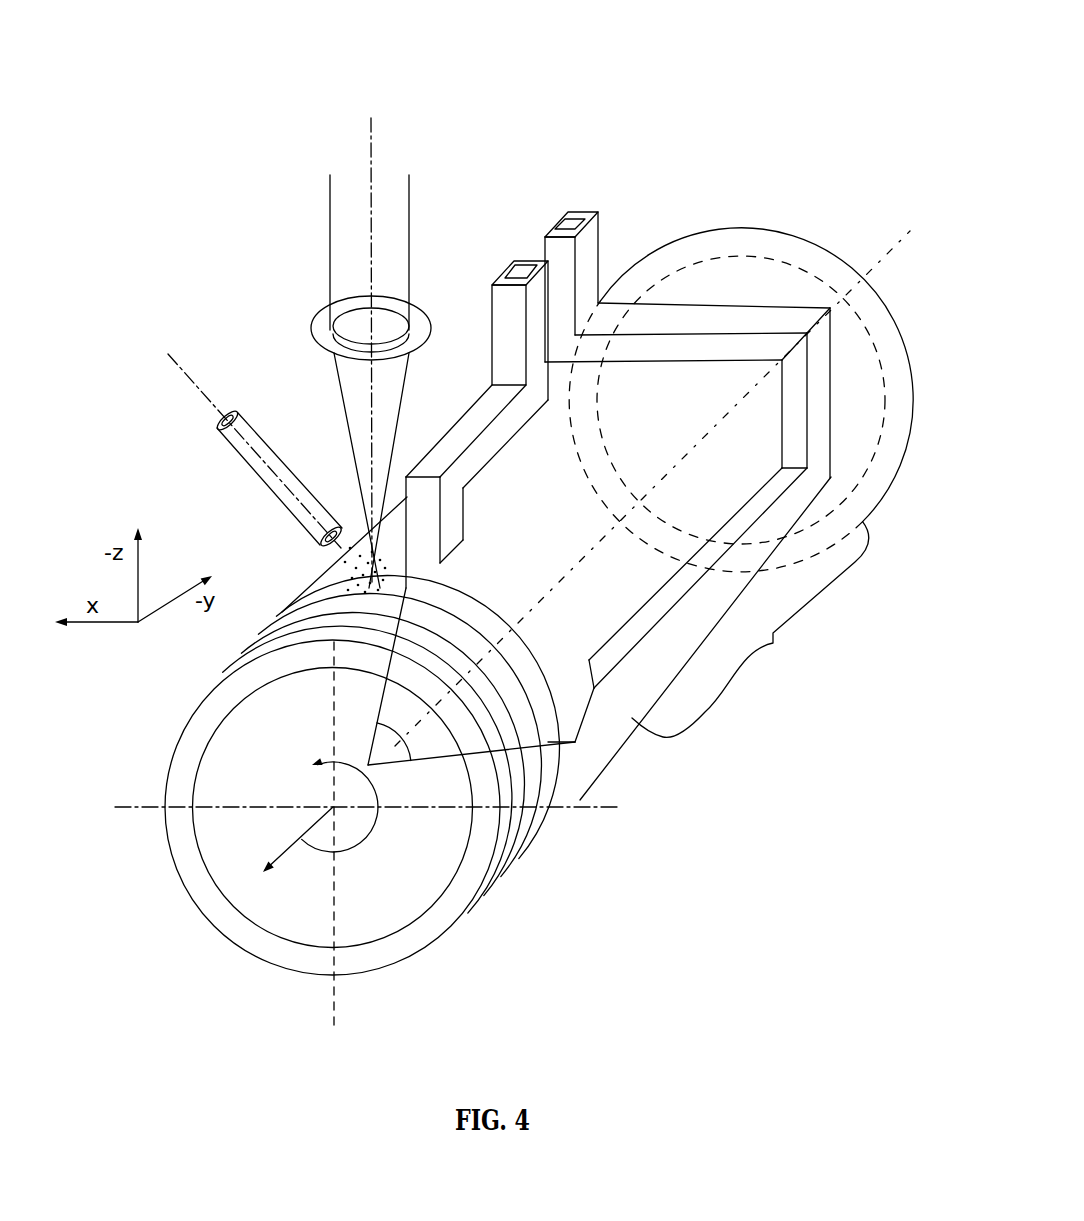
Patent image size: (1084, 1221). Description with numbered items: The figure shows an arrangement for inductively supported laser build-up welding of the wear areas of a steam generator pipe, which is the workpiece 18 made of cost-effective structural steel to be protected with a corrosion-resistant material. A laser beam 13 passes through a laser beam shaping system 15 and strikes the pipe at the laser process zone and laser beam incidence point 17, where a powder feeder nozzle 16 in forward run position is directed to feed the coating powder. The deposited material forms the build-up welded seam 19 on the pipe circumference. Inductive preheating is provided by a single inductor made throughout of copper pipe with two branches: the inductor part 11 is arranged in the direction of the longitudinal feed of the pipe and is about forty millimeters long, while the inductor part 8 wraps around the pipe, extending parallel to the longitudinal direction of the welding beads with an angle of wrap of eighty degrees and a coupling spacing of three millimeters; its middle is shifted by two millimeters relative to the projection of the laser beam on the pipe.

The inductor part I2 8 is at (551, 690).
The inductor part I1 11 is at (775, 645).
The laser beam 13 is at (370, 252).
The laser beam shaping system 15 is at (373, 330).
The powder feeder nozzle 16 is at (225, 418).
The laser process zone and laser beam incidence point LP 17 is at (240, 505).
The workpiece 18 is at (478, 768).
The build-up welded seam 19 is at (517, 727).